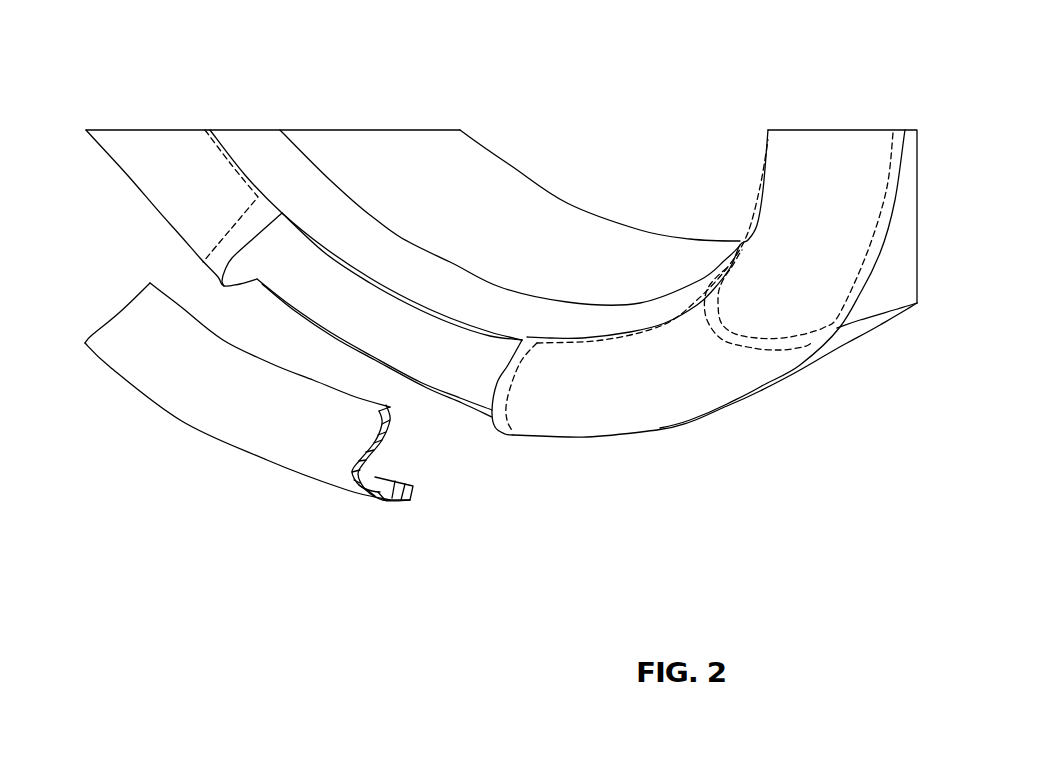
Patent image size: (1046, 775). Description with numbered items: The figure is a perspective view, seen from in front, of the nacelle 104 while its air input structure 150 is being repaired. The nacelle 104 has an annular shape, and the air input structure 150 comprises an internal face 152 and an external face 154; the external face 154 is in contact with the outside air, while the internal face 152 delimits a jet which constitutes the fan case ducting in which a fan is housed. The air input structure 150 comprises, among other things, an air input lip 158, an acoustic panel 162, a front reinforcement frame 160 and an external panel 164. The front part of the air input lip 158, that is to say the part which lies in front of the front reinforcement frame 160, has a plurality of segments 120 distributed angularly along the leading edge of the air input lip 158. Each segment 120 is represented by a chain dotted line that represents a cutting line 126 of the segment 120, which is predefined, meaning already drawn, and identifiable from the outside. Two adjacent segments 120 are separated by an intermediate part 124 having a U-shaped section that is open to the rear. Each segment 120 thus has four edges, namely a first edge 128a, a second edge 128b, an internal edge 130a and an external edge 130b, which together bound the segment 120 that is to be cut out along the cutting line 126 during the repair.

The nacelle 104 is at (730, 73).
The segment 120 is at (727, 367).
The intermediate part 124 is at (500, 383).
The cutting line 126 is at (715, 347).
The first edge 128a is at (400, 497).
The second edge 128b is at (110, 312).
The internal edge 130a is at (163, 356).
The external edge 130b is at (357, 457).
The air input structure 150 is at (213, 572).
The internal face 152 is at (373, 102).
The external face 154 is at (775, 455).
The air input lip 158 is at (147, 122).
The front reinforcement frame 160 is at (487, 370).
The acoustic panel 162 is at (557, 240).
The external panel 164 is at (877, 325).